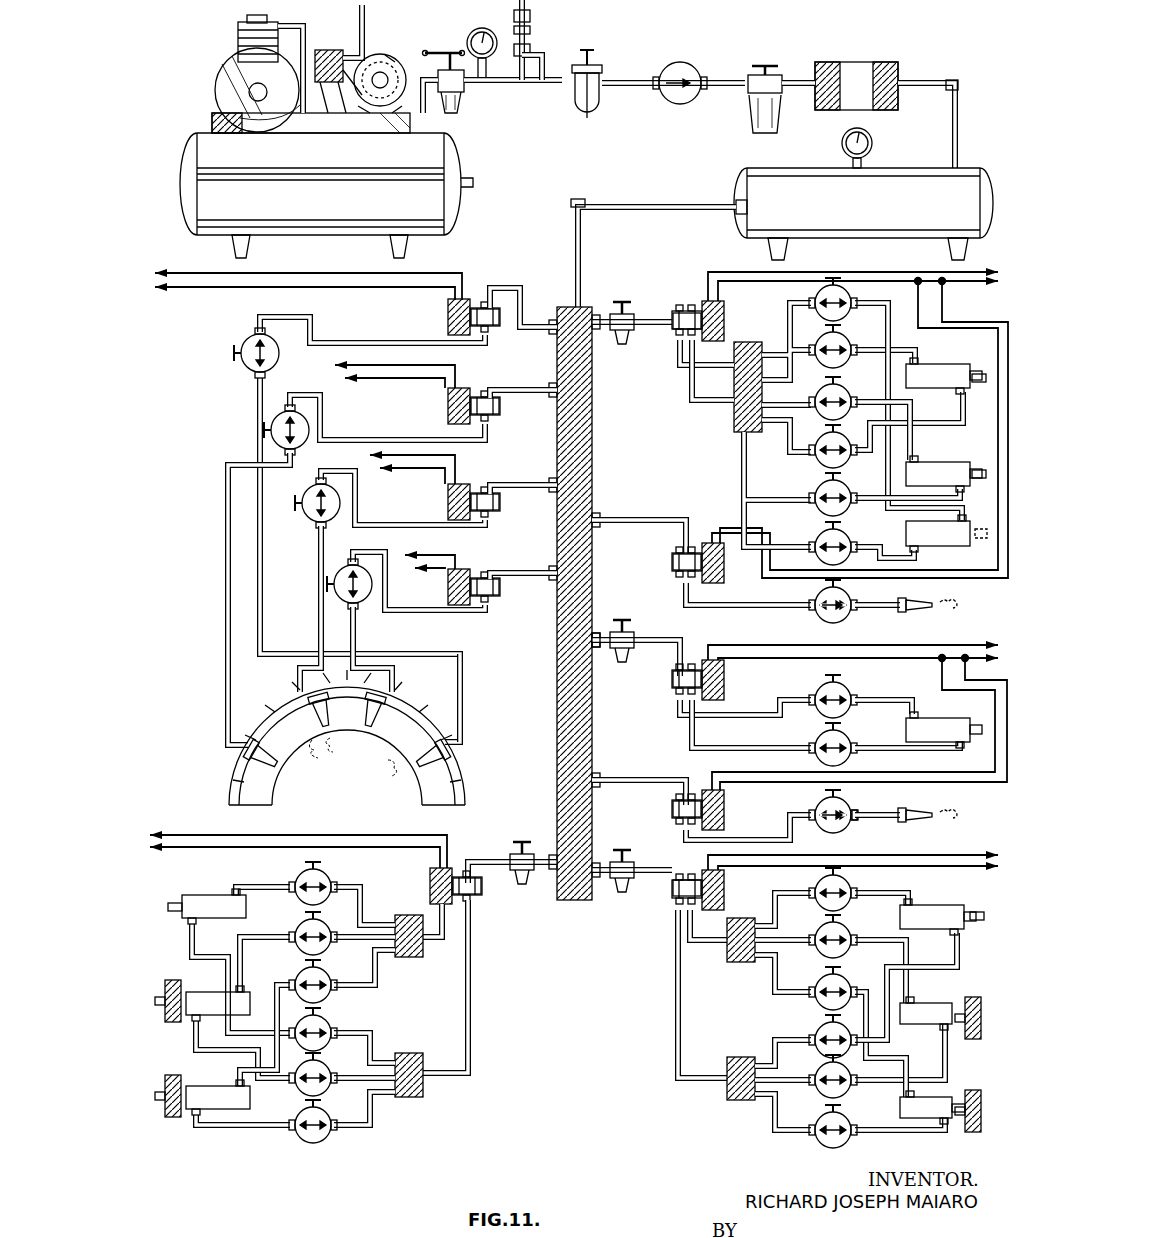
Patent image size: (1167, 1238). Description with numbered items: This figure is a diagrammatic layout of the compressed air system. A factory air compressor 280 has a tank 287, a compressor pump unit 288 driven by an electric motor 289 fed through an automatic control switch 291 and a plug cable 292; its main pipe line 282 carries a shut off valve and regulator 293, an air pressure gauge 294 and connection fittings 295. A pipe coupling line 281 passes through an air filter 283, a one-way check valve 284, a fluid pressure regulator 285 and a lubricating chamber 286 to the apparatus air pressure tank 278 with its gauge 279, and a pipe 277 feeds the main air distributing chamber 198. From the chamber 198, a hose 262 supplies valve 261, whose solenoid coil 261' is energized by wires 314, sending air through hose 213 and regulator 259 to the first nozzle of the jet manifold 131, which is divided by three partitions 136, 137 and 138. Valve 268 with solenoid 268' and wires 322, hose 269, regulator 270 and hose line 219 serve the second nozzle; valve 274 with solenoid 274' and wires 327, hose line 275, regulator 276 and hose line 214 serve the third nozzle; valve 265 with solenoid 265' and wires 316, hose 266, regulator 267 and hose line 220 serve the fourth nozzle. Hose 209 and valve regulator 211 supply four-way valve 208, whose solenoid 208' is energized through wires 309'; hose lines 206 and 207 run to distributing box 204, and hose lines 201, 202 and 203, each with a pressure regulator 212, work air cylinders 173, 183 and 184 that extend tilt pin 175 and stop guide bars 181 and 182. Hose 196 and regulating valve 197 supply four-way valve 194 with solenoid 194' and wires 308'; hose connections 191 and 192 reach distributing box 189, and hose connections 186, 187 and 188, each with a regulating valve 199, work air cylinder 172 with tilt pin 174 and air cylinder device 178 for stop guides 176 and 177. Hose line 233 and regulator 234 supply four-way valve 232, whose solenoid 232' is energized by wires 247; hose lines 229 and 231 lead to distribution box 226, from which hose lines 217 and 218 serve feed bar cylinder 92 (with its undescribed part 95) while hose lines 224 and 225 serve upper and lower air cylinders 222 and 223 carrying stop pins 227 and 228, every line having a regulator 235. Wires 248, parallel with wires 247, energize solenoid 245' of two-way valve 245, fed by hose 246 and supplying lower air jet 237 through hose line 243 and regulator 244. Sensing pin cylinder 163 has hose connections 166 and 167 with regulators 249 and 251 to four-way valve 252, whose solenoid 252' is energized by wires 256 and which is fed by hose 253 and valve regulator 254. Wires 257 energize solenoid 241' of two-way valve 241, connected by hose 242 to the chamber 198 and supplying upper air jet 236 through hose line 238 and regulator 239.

The factory air compressor 280 is at (366, 129).
The tank 287 is at (455, 215).
The air compressor pump unit 288 is at (236, 50).
The automatic control switch 291 is at (330, 50).
The plug cable 292 is at (365, 14).
The electric motor 289 is at (382, 60).
The air pressure gauge 294 is at (482, 28).
The main shut off valve and regulator 293 is at (462, 100).
The main factory air supply line 282 is at (530, 35).
The air connection fittings 295 is at (530, 26).
The apparatus air filter 283 is at (600, 100).
The pipe coupling line 281 is at (722, 80).
The one-way check valve 284 is at (672, 100).
The fluid pressure regulator 285 is at (783, 112).
The lubricating chamber 286 is at (868, 62).
The apparatus air pressure tank 278 is at (812, 155).
The pressure gauge 279 is at (870, 138).
The pipe 277 is at (668, 178).
The main air pressure distributing chamber 198 is at (560, 705).
The wires 322 is at (365, 278).
The solenoid 268' is at (441, 317).
The solenoid-operated valve 268 is at (511, 331).
The hose 269 is at (518, 288).
The fluid regulator 270 is at (243, 335).
The wires 314 is at (385, 372).
The air feed solenoid coil 261' is at (447, 403).
The solenoid-operated valve 261 is at (511, 415).
The hose 262 is at (515, 390).
The regulator 259 is at (302, 442).
The hose 213 is at (226, 680).
The wires 327 is at (415, 465).
The jet solenoid 274' is at (446, 502).
The solenoid-actuated two-way valve 274 is at (511, 507).
The hose line 275 is at (512, 485).
The fluid regulator 276 is at (308, 520).
The wires 316 is at (435, 565).
The solenoid 265' is at (446, 591).
The solenoid-operated two-way valve 265 is at (511, 600).
The hose 266 is at (530, 560).
The hose fluid regulator 267 is at (328, 580).
The hose line 220 is at (348, 630).
The hose line 214 is at (318, 600).
The hose line 219 is at (465, 690).
The jet manifold 131 is at (418, 698).
The partition 136 is at (312, 748).
The partition 137 is at (338, 745).
The partition 138 is at (390, 770).
The wires 309' is at (298, 834).
The valve regulator 211 is at (540, 832).
The hose 209 is at (470, 855).
The solenoid 208' is at (430, 886).
The solenoid-operated four-way valve 208 is at (496, 898).
The hose line 207 is at (473, 995).
The hose line 206 is at (418, 958).
The air distributing box 204 is at (412, 1053).
The individual pressure regulators 212 is at (325, 878).
The left double acting air cylinder 173 is at (246, 900).
The tilt pin 175 is at (178, 900).
The hose lines 201 is at (262, 885).
The stop guide bar 181 is at (175, 980).
The double acting air cylinder 183 is at (242, 1015).
The hose lines 202 is at (238, 990).
The stop guide bar 182 is at (176, 1075).
The double acting air cylinder 184 is at (250, 1092).
The hose lines 203 is at (246, 1068).
The hose line 233 is at (650, 312).
The pressure regulator 234 is at (622, 302).
The solenoid-operated four-way valve 232 is at (670, 331).
The solenoid 232' is at (722, 321).
The wires 247 is at (810, 278).
The wires 248 is at (920, 578).
The hose line 229 is at (745, 347).
The hose line 231 is at (690, 366).
The air distribution box 226 is at (700, 398).
The individual fluid pressure regulator 235 is at (848, 300).
The hose line 217 is at (888, 332).
The feed bar cylinder 92 is at (955, 372).
The piston rod 95 is at (985, 372).
The hose lines 224 is at (905, 410).
The hose line 218 is at (914, 422).
The work stop pin 227 is at (985, 468).
The upper double acting air cylinder 222 is at (935, 476).
The hose lines 225 is at (890, 470).
The lower double acting air cylinder 223 is at (912, 535).
The work stop pin 228 is at (968, 562).
The hose 246 is at (630, 518).
The solenoid-operated two-way valve 245 is at (658, 556).
The solenoid 245' is at (726, 569).
The hose line 243 is at (730, 608).
The pressure regulator 244 is at (848, 615).
The air jet 237 is at (924, 600).
The valve regulator 254 is at (650, 610).
The hose 253 is at (690, 650).
The solenoid-operated four-way valve 252 is at (661, 693).
The solenoid 252' is at (725, 680).
The wires 256 is at (920, 645).
The hose connection 166 is at (775, 695).
The pressure regulator 249 is at (848, 685).
The pressure regulator 251 is at (812, 740).
The hose connection 167 is at (892, 744).
The feed bar barrel load sensing device pin cylinder 163 is at (965, 712).
The hose 242 is at (650, 778).
The solenoid-operated two-way valve 241 is at (658, 804).
The solenoid 241' is at (721, 810).
The hose line 238 is at (771, 815).
The pressure regulator 239 is at (848, 822).
The wires 257 is at (912, 778).
The air jet 236 is at (918, 808).
The wires 308' is at (853, 846).
The hose 196 is at (640, 858).
The pressure regulating valve 197 is at (618, 892).
The right cylinder solenoid-operated four-way valve 194 is at (663, 903).
The right cylinder guides solenoid 194' is at (720, 890).
The hose connection 192 is at (676, 985).
The hose connection 191 is at (705, 948).
The distributing box 189 is at (740, 1057).
The pressure regulating valve 199 is at (848, 888).
The hose connections 186 is at (905, 910).
The right double acting air cylinder 172 is at (955, 890).
The tilt pin 174 is at (1002, 890).
The hose connections 187 is at (880, 942).
The flat stop guide 176 is at (955, 990).
The hose connections 188 is at (870, 1052).
The flat stop guide 177 is at (980, 1090).
The double acting air cylinder device 178 is at (945, 1122).